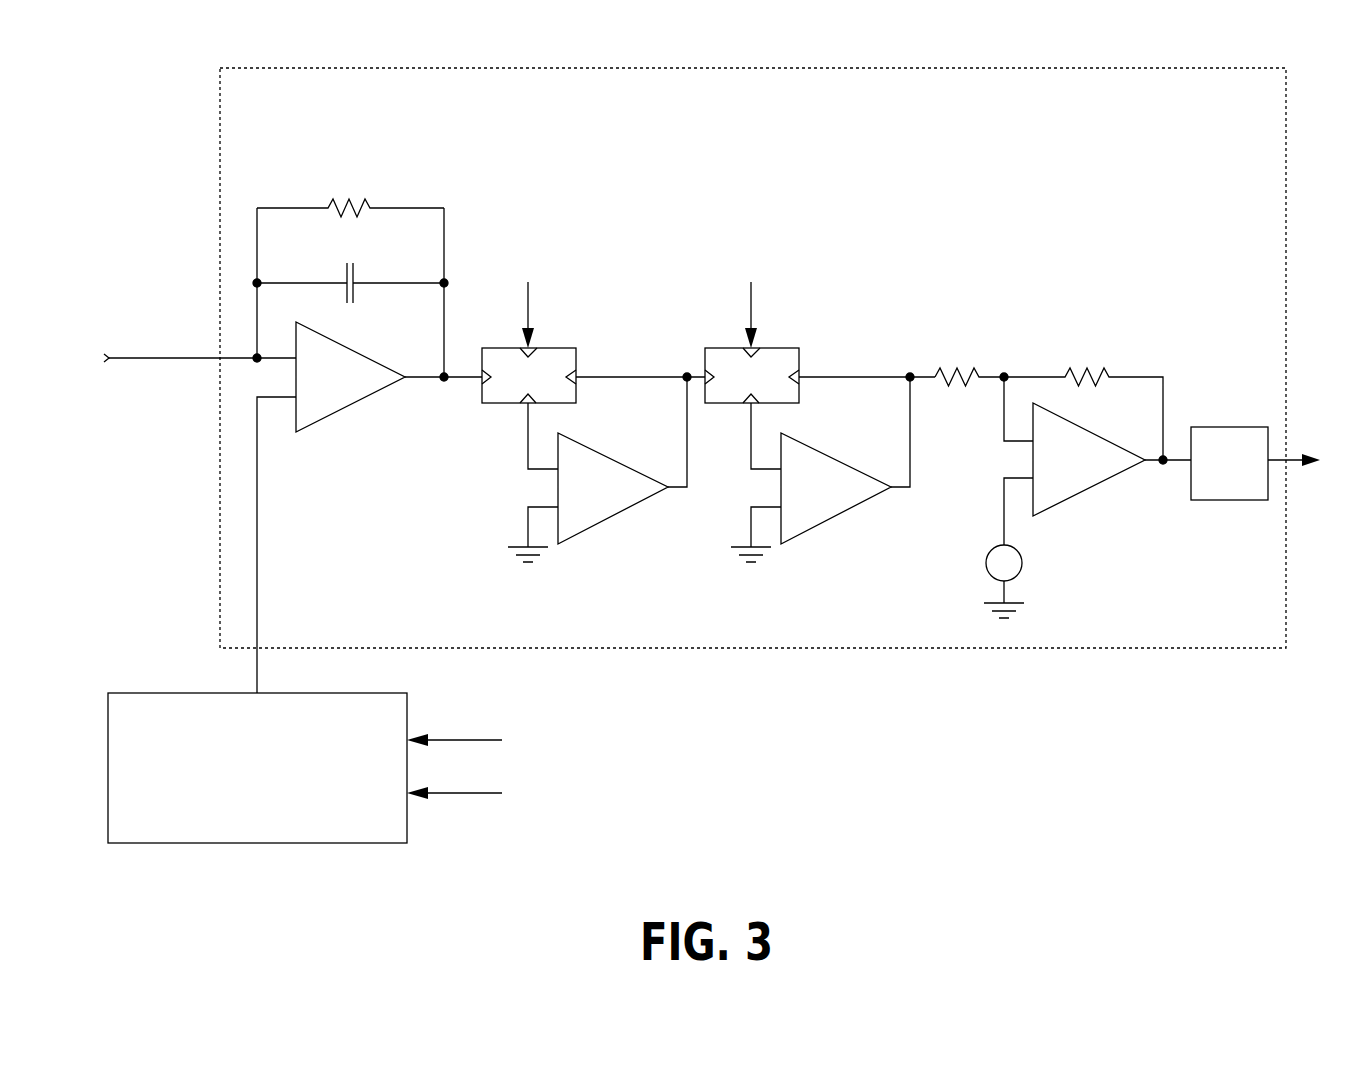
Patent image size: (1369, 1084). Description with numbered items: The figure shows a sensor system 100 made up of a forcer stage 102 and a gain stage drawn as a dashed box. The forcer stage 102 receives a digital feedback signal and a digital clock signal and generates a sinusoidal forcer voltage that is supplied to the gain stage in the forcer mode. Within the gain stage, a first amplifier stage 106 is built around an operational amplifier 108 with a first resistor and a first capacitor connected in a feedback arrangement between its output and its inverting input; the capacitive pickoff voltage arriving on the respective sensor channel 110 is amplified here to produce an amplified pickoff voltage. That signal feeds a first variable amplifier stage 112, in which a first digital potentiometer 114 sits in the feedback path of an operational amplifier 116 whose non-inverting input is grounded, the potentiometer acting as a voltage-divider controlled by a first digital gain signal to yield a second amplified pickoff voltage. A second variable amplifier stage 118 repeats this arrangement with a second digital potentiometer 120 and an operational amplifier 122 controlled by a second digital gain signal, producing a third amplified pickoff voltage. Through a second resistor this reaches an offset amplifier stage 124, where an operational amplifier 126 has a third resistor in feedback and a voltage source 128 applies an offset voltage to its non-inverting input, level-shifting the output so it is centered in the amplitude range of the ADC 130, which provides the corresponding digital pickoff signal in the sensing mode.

The sensor system 100 is at (118, 75).
The forcer stage 102 is at (197, 693).
The first amplifier stage 106 is at (351, 135).
The operational amplifier 108 is at (345, 407).
The sensor channel 110 is at (166, 360).
The first variable amplifier stage 112 is at (592, 220).
The first digital potentiometer 114 is at (550, 348).
The operational amplifier 116 is at (612, 517).
The second variable amplifier stage 118 is at (817, 220).
The second digital potentiometer 120 is at (773, 348).
The operational amplifier 122 is at (835, 517).
The offset amplifier stage 124 is at (1077, 285).
The operational amplifier 126 is at (1085, 493).
The voltage source 128 is at (985, 560).
The ADC 130 is at (1230, 427).